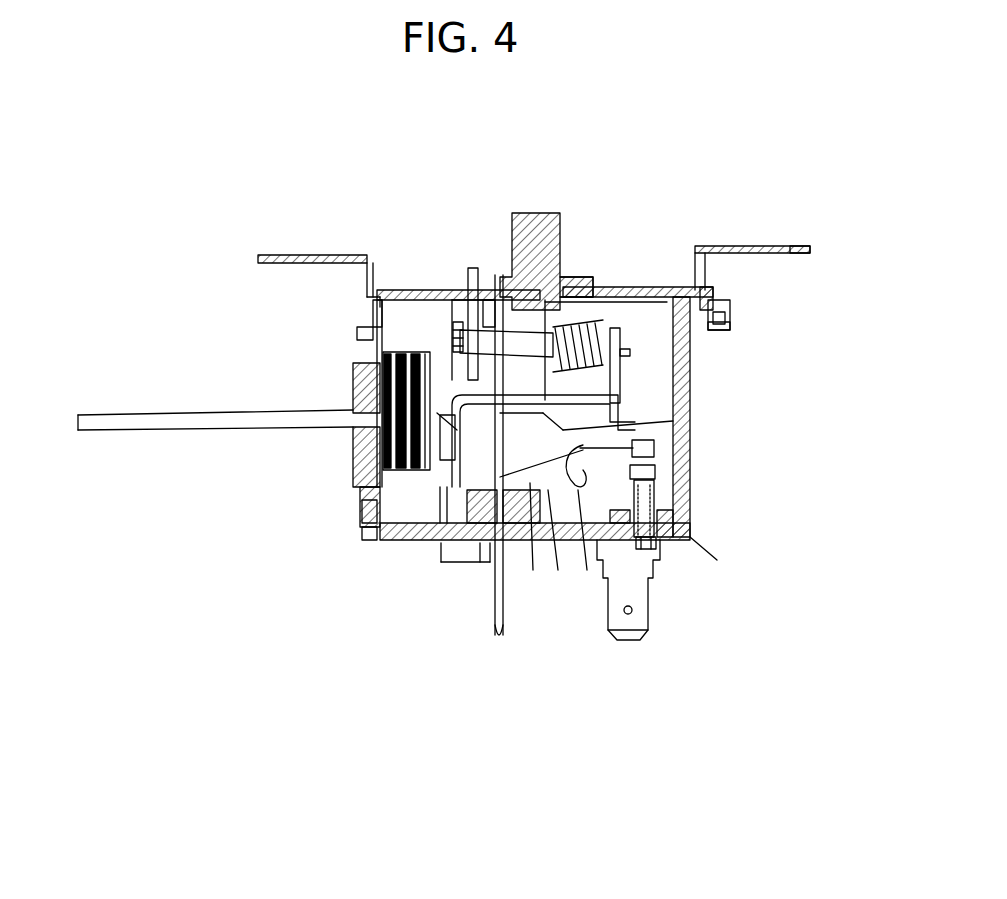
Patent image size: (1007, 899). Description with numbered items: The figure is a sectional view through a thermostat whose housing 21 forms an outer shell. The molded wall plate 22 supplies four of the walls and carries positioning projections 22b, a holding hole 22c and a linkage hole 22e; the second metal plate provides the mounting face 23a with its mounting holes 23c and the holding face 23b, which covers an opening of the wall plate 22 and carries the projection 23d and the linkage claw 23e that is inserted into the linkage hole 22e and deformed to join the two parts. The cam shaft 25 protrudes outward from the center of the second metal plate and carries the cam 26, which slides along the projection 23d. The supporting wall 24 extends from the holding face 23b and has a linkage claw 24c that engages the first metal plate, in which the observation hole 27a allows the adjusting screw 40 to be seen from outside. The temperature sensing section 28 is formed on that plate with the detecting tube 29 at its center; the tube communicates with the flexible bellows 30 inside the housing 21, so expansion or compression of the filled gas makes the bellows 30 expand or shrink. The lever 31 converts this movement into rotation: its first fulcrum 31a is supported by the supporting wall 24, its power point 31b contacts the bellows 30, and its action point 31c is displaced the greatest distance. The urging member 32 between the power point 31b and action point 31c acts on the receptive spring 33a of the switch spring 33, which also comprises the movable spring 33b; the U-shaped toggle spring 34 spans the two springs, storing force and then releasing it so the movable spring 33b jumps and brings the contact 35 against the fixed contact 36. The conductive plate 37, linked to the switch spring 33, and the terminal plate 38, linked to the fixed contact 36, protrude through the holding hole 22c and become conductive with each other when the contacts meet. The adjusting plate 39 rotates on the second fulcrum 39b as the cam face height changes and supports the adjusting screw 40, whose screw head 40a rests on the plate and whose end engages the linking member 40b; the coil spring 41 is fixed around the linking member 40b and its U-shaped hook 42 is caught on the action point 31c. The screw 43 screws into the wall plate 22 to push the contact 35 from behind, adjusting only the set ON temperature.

The housing 21 is at (707, 508).
The wall plate 22 is at (690, 455).
The positioning projections 22b is at (360, 533).
The holding hole 22c is at (483, 553).
The linkage hole 22e is at (723, 302).
The mounting face 23a is at (793, 247).
The holding face 23b is at (670, 287).
The mounting holes 23c is at (306, 255).
The projection 23d is at (607, 288).
The linkage claw 23e is at (727, 327).
The supporting wall 24 is at (362, 493).
The linkage claw 24c is at (357, 328).
The cam shaft 25 is at (533, 213).
The cam 26 is at (583, 290).
The observation hole 27a is at (373, 310).
The temperature sensing section 28 is at (353, 442).
The detecting tube 29 is at (78, 415).
The flexible bellows 30 is at (353, 380).
The lever 31 is at (455, 465).
The first fulcrum 31a is at (493, 540).
The power point 31b is at (397, 493).
The action point 31c is at (615, 370).
The urging member 32 is at (700, 424).
The switch spring 33 is at (605, 715).
The receptive spring 33a is at (558, 570).
The movable spring 33b is at (533, 570).
The toggle spring 34 is at (587, 570).
The contact 35 is at (690, 537).
The fixed contact 36 is at (655, 455).
The conductive plate 37 is at (490, 547).
The terminal plate 38 is at (630, 633).
The adjusting plate 39 is at (473, 273).
The second fulcrum 39b is at (457, 367).
The adjusting screw 40 is at (507, 330).
The screw head 40a is at (450, 377).
The linking member 40b is at (547, 290).
The coil spring 41 is at (583, 337).
The U-shaped hook 42 is at (630, 352).
The screw 43 is at (653, 548).